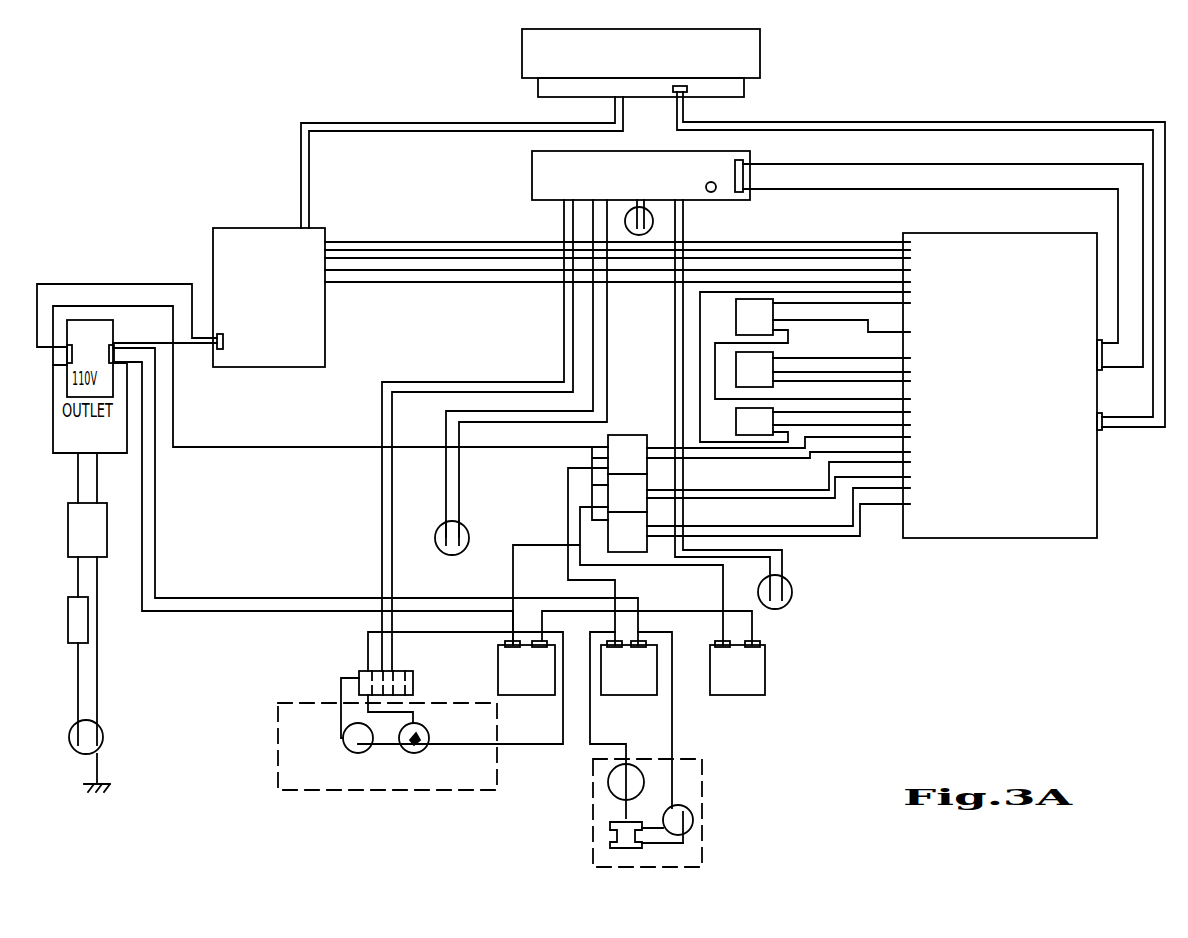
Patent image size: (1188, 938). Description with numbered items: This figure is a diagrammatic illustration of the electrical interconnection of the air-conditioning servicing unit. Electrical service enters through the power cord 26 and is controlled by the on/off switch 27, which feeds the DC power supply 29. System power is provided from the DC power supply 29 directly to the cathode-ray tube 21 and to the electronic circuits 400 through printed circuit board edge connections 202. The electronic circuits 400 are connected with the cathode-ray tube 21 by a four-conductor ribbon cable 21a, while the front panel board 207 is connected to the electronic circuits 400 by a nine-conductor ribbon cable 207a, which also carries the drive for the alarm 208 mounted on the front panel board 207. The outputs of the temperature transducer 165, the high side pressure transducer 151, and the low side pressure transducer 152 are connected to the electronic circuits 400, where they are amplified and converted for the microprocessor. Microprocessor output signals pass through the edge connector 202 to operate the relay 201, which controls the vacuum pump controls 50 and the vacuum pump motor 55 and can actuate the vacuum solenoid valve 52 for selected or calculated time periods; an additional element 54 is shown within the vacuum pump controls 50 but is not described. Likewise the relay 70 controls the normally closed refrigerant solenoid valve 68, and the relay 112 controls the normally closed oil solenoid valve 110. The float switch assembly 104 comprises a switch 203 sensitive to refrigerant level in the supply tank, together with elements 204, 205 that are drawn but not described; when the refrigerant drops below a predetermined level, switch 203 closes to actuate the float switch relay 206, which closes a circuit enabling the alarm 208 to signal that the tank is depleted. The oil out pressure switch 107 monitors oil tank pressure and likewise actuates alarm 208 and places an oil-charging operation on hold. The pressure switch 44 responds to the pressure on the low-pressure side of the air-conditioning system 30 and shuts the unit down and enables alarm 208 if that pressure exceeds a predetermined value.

The cathode-ray tube 21 is at (760, 62).
The four-conductor ribbon cable 21a is at (985, 122).
The front panel board 207 is at (750, 153).
The nine-conductor ribbon cable 207a is at (1005, 164).
The alarm 208 is at (711, 192).
The DC power supply 29 is at (325, 236).
The air-conditioning system 30 is at (226, 347).
The printed circuit board edge connections 202 is at (897, 231).
The electronic circuits 400 is at (1022, 233).
The low side pressure transducer 152 is at (736, 320).
The temperature transducer 165 is at (775, 353).
The high side pressure transducer 151 is at (736, 428).
The relay 201 is at (640, 435).
The relay 112 is at (652, 484).
The relay 70 is at (640, 552).
The oil out pressure switch 107 is at (792, 592).
The pressure switch 44 is at (469, 538).
The refrigerant solenoid valve 68 is at (500, 652).
The vacuum solenoid valve 52 is at (647, 695).
The oil solenoid valve 110 is at (766, 655).
The float switch relay 206 is at (361, 672).
The switch 203 is at (431, 711).
The float switch assembly 104 is at (278, 763).
The float switch 204 is at (343, 740).
The float switch 205 is at (430, 739).
The on/off switch 27 is at (107, 535).
The power cord 26 is at (103, 741).
The vacuum pump controls 50 is at (715, 749).
The vacuum pump motor 55 is at (617, 836).
The vacuum gauge 54 is at (692, 826).